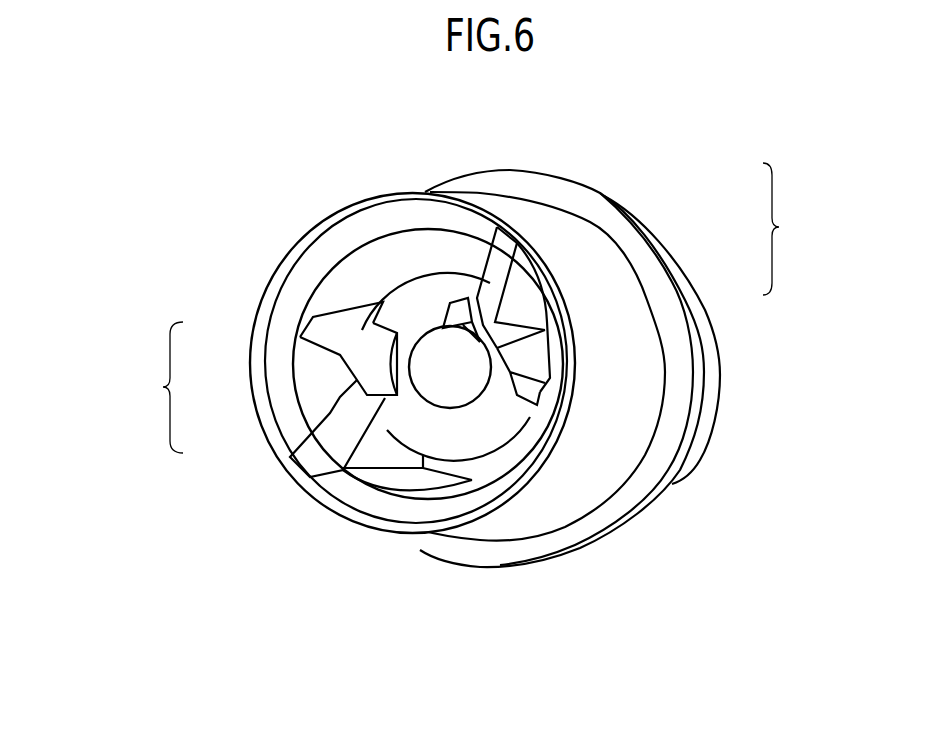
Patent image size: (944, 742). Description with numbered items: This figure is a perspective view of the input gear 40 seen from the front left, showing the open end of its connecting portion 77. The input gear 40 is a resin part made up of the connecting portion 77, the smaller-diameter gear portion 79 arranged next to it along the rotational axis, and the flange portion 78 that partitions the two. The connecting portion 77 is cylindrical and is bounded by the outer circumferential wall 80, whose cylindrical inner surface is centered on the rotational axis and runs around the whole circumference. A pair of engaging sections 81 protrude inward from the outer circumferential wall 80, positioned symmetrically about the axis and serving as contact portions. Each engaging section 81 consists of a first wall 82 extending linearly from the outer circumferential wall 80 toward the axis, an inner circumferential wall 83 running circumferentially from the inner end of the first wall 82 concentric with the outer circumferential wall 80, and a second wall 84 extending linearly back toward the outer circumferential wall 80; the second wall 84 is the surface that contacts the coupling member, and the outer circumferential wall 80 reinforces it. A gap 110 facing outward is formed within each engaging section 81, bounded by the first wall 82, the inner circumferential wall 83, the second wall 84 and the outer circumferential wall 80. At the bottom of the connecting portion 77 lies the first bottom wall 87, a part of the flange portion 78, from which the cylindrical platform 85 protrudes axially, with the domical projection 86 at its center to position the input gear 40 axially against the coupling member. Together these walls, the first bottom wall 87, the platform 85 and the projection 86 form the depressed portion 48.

The input gear 40 is at (668, 118).
The depressed portion 48 is at (334, 291).
The connecting portion 77 is at (608, 438).
The flange portion 78 is at (610, 553).
The gear portion 79 is at (716, 420).
The outer circumferential wall 80 is at (368, 267).
The engaging section 81 is at (470, 308).
The first wall 82 is at (515, 390).
The inner circumferential wall 83 is at (497, 348).
The second wall 84 is at (497, 265).
The platform 85 is at (510, 470).
The projection 86 is at (447, 366).
The first bottom wall 87 is at (472, 467).
The gap 110 is at (523, 357).